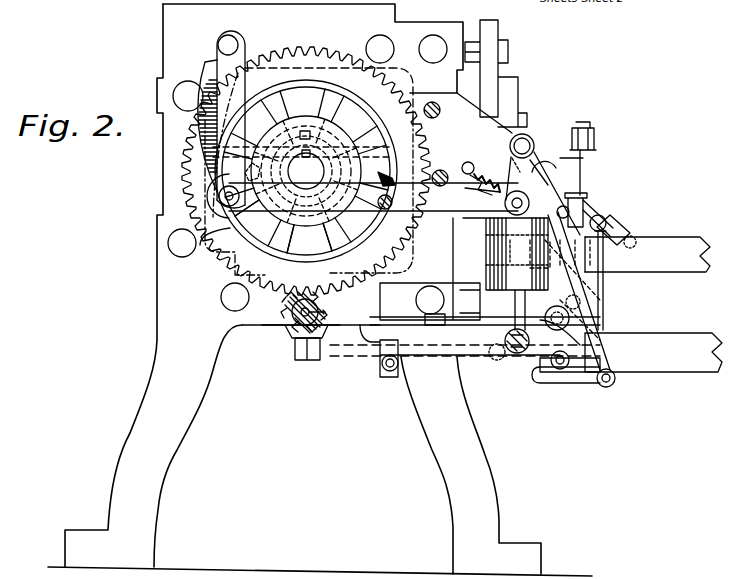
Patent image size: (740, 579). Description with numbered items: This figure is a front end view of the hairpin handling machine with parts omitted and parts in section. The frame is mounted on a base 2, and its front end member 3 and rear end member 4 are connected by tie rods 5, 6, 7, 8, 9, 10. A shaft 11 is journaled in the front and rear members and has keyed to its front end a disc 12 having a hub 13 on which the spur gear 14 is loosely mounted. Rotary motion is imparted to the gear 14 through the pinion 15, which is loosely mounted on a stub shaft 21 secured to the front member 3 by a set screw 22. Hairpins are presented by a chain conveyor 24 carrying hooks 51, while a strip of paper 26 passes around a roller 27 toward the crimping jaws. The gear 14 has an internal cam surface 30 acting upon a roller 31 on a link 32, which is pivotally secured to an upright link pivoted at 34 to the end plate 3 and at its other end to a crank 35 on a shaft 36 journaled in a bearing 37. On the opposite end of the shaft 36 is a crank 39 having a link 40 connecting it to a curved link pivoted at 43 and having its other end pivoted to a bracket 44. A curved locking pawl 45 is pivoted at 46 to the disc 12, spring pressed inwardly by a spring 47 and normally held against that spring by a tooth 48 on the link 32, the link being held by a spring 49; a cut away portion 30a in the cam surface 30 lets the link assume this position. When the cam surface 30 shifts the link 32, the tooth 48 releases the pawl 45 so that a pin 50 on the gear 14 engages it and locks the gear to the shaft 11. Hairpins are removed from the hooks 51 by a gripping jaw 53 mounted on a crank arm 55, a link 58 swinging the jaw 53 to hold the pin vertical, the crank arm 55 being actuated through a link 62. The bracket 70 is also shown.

The base 2 is at (556, 576).
The front end member 3 is at (163, 36).
The rear end member 4 is at (584, 385).
The tie rod 5 is at (187, 80).
The tie rod 6 is at (370, 37).
The tie rod 7 is at (433, 35).
The tie rod 8 is at (429, 286).
The tie rod 9 is at (222, 304).
The tie rod 10 is at (183, 256).
The shaft 11 is at (306, 171).
The disc 12 is at (360, 132).
The hub 13 is at (320, 165).
The spur gear 14 is at (302, 49).
The pinion 15 is at (280, 312).
The stub shaft 21 is at (330, 312).
The set screw 22 is at (321, 352).
The chain conveyor 24 is at (591, 136).
The strip of paper 26 is at (663, 242).
The roller 27 is at (462, 228).
The internal cam surface 30 is at (340, 78).
The cut away portion 30a is at (199, 170).
The roller 31 is at (223, 207).
The link 32 is at (210, 192).
The pivot 34 is at (236, 52).
The crank 35 is at (216, 53).
The shaft 36 is at (530, 136).
The bearing 37 is at (521, 126).
The crank 39 is at (585, 197).
The link 40 is at (598, 345).
The pivot 43 is at (616, 380).
The bracket 44 is at (600, 350).
The curved locking pawl 45 is at (309, 239).
The pivot 46 is at (262, 156).
The spring 47 is at (244, 219).
The tooth 48 is at (383, 175).
The spring 49 is at (476, 170).
The pin 50 is at (300, 131).
The hook 51 is at (588, 160).
The gripping jaw 53 is at (598, 218).
The crank arm 55 is at (535, 372).
The link 58 is at (608, 278).
The link 62 is at (440, 356).
The bracket 70 is at (487, 22).